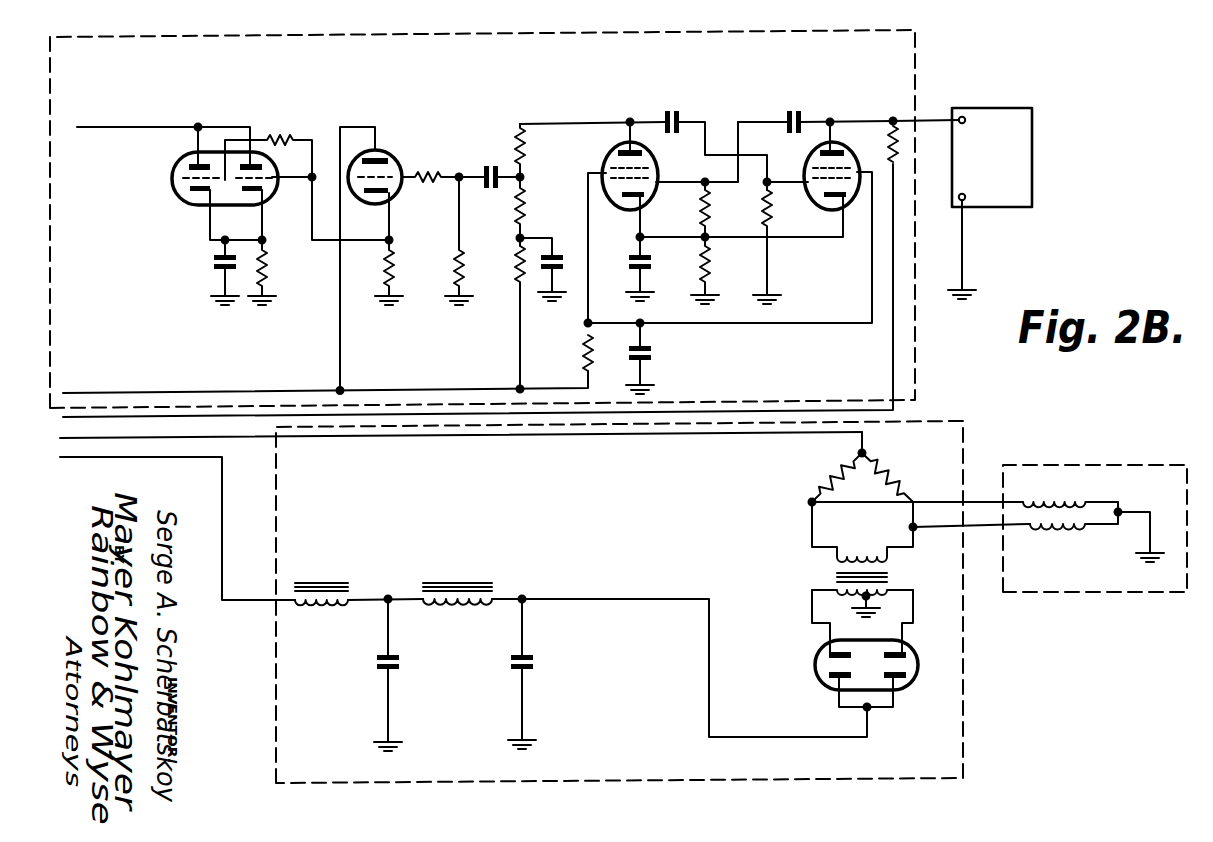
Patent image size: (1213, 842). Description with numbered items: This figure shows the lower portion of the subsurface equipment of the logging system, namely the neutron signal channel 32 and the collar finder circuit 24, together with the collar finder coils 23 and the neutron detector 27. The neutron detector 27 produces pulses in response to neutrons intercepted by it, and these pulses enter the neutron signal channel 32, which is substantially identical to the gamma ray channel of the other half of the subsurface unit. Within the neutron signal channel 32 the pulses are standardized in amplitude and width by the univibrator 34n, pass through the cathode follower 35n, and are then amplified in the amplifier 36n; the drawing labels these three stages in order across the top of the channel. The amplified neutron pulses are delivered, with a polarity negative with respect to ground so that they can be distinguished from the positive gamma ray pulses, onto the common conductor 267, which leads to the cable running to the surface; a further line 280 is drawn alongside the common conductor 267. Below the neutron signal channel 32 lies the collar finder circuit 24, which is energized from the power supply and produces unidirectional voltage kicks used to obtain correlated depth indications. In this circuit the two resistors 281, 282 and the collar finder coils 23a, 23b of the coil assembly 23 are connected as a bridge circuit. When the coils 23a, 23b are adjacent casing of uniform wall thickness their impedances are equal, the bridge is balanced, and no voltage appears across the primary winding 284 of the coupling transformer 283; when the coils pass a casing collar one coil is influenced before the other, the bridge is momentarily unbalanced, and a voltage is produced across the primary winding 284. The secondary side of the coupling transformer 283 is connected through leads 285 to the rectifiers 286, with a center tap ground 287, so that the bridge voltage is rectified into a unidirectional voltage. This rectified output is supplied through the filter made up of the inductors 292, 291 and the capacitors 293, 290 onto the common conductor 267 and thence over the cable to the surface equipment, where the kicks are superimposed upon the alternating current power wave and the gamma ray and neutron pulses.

The neutron signal channel 32 is at (875, 66).
The amplifier 36n is at (323, 103).
The cathode follower 35n is at (548, 101).
The univibrator 34n is at (865, 98).
The neutron detector 27 is at (1008, 200).
The conductor 280 is at (128, 439).
The common conductor 267 is at (138, 458).
The collar finder circuit 24 is at (653, 602).
The inductor 292 is at (330, 605).
The inductor 291 is at (468, 605).
The capacitor 293 is at (400, 658).
The capacitor 290 is at (535, 662).
The resistor 281 is at (836, 477).
The resistor 282 is at (890, 474).
The primary winding 284 is at (875, 541).
The coupling transformer 283 is at (940, 581).
The lead 285 is at (848, 598).
The center tap ground 287 is at (880, 607).
The rectifiers 286 is at (818, 681).
The collar finder coils 23 is at (1095, 528).
The collar finder coil 23a is at (1048, 500).
The collar finder coil 23b is at (1065, 527).